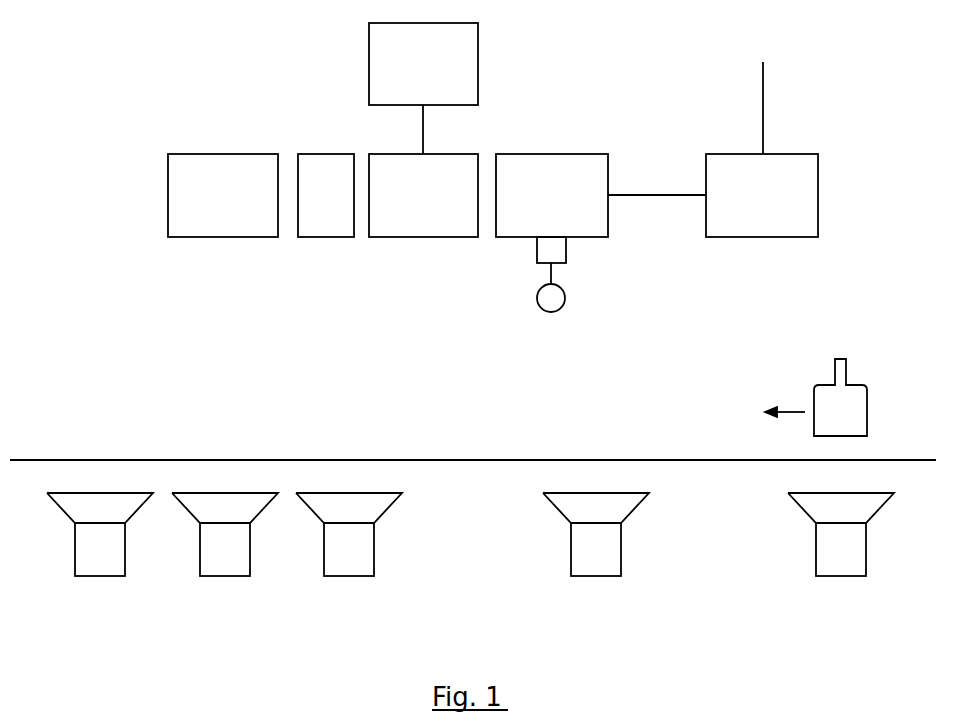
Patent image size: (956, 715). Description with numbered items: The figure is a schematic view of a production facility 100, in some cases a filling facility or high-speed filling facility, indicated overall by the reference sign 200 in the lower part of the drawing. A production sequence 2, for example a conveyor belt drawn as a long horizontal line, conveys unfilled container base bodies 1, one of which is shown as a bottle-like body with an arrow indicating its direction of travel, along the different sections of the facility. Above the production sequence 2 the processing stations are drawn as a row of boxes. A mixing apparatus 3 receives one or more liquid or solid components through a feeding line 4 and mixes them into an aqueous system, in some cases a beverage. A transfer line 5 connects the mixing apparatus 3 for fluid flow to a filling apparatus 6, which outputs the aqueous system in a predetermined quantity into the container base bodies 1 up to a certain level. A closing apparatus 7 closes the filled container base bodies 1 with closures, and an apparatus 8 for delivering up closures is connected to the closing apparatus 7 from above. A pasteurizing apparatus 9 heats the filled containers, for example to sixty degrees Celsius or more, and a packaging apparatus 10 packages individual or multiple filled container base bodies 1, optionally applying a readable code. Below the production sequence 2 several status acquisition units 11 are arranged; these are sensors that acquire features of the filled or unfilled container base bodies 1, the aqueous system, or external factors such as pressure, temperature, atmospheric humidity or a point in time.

The production facility 100 is at (128, 86).
The filling installation 200 is at (128, 714).
The container base body 1 is at (840, 358).
The production sequence 2 is at (54, 459).
The mixing apparatus 3 is at (806, 154).
The feeding line 4 is at (763, 108).
The transfer line 5 is at (658, 196).
The filling apparatus 6 is at (553, 154).
The closing apparatus 7 is at (425, 238).
The apparatus for delivering up closures 8 is at (478, 62).
The pasteurizing apparatus 9 is at (328, 154).
The packaging apparatus 10 is at (226, 154).
The status acquisition unit 11 is at (597, 577).